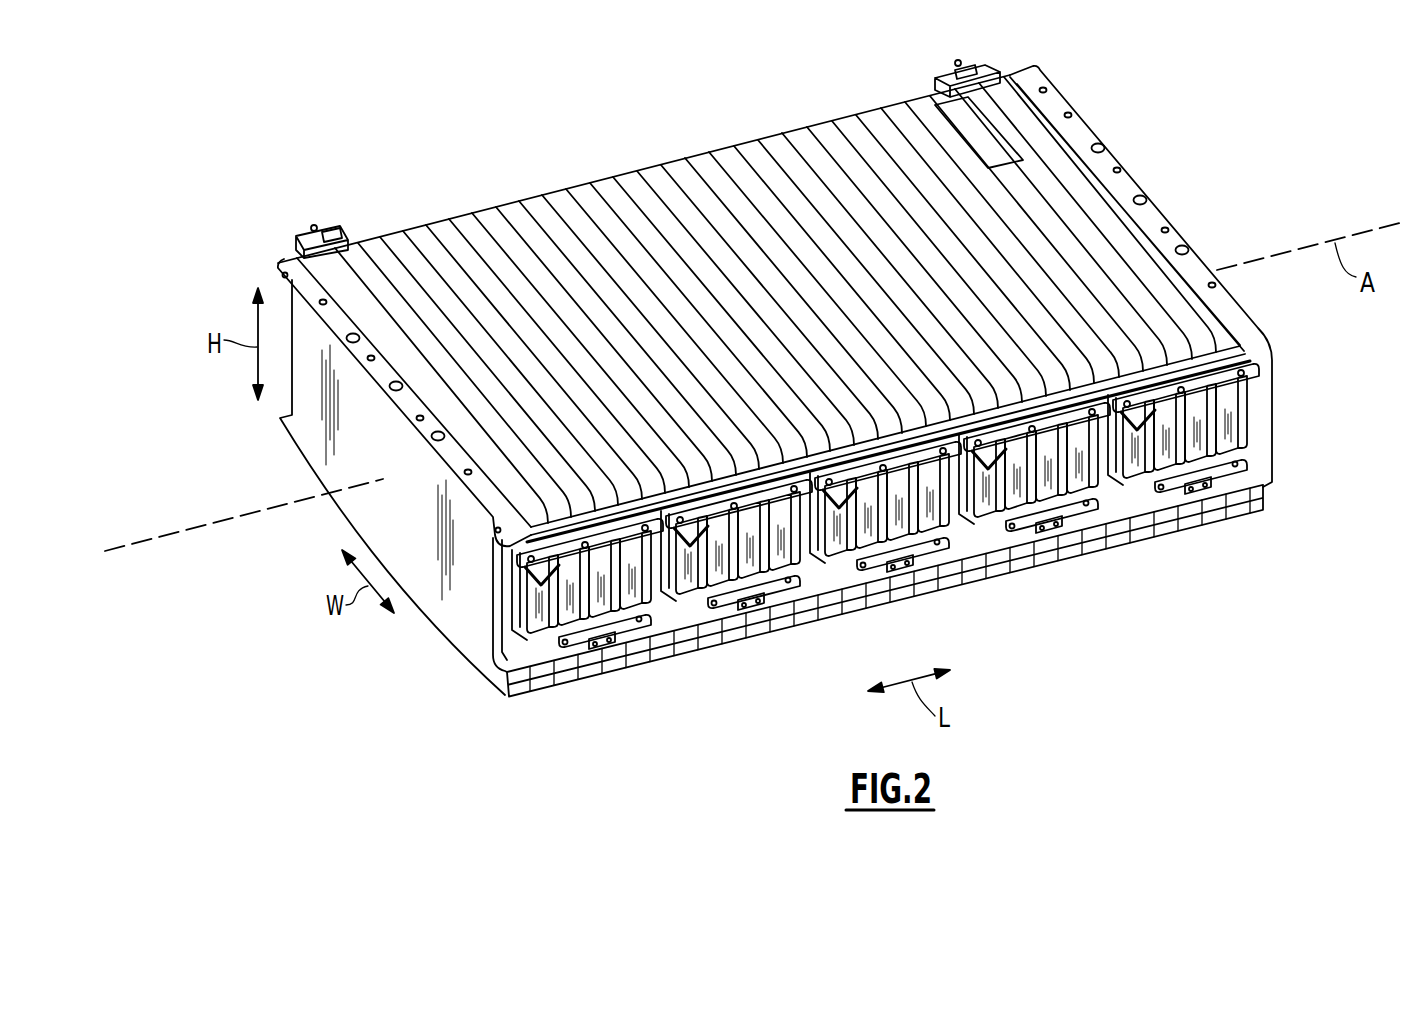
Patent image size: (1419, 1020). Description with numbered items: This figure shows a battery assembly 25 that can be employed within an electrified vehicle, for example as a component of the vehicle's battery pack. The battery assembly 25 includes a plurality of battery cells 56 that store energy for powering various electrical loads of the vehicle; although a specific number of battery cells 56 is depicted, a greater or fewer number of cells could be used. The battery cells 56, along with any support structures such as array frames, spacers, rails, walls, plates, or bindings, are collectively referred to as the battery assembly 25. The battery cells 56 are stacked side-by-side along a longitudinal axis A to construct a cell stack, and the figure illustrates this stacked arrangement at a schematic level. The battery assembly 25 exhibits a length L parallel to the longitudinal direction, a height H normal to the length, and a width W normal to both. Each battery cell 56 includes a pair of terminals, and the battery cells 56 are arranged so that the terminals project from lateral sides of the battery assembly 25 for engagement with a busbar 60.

The battery assembly 25 is at (775, 395).
The battery cells 56 is at (390, 272).
The busbar 60 is at (580, 637).